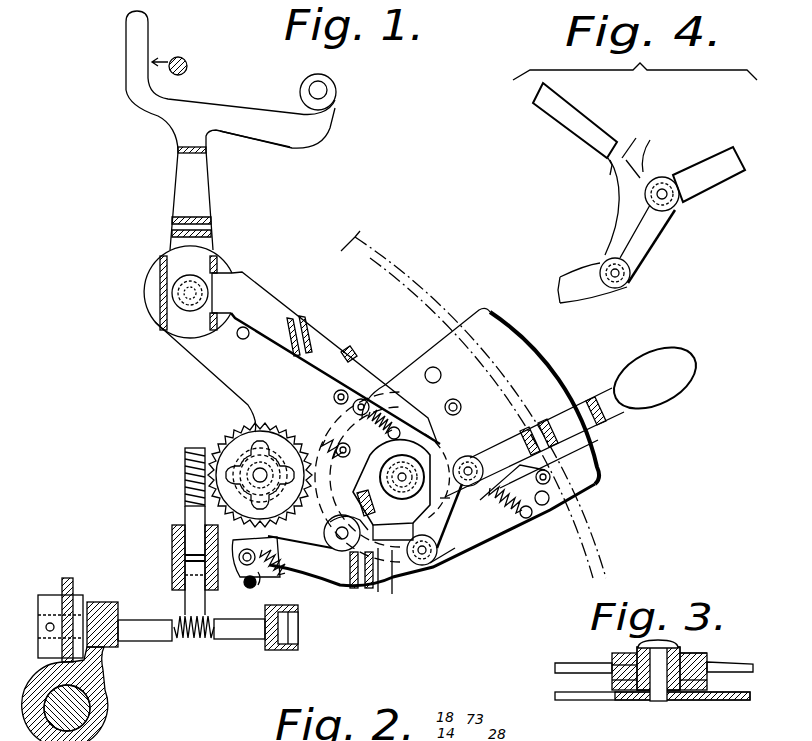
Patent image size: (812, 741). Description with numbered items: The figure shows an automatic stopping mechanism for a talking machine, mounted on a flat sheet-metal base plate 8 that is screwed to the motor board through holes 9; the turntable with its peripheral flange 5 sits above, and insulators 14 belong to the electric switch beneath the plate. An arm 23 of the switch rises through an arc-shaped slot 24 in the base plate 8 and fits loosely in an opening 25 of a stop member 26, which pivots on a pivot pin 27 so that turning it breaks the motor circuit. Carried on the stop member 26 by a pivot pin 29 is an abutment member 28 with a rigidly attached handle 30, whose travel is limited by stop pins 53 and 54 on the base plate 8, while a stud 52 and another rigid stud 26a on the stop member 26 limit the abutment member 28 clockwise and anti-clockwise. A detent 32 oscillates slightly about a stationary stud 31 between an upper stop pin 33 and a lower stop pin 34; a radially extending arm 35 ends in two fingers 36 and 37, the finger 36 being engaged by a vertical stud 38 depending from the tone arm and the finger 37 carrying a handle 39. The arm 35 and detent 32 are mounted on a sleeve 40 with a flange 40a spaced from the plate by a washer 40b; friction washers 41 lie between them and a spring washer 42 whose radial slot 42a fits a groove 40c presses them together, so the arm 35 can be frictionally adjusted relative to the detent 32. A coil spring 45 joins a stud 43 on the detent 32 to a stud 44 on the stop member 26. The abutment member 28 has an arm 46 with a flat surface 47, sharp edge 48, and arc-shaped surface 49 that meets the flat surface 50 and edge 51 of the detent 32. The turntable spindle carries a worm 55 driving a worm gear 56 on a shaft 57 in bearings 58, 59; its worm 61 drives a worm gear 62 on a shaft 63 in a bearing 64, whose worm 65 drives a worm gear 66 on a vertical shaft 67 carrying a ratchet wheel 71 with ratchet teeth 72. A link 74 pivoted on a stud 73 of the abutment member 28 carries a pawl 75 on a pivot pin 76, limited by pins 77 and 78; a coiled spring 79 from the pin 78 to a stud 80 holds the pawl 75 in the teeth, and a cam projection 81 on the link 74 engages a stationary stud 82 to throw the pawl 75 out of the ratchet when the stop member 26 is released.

In FIG. 1, the peripheral flange 5 is at (415, 282).
In FIG. 1, the base plate 8 is at (527, 364).
In FIG. 3, the base plate 8 is at (740, 702).
In FIG. 1, the holes 9 is at (240, 338).
In FIG. 1, the insulators 14 is at (405, 566).
In FIG. 1, the arm 23 is at (380, 568).
In FIG. 1, the arc-shaped slot 24 is at (396, 572).
In FIG. 1, the opening 25 is at (357, 500).
In FIG. 1, the stop member 26 is at (393, 520).
In FIG. 1, the rigid stud 26a is at (452, 550).
In FIG. 1, the pivot pin or stud 27 is at (379, 471).
In FIG. 1, the abutment member 28 is at (446, 516).
In FIG. 4, the abutment member 28 is at (647, 240).
In FIG. 1, the pivot pin 29 is at (477, 462).
In FIG. 4, the pivot pin 29 is at (673, 200).
In FIG. 1, the handle 30 is at (575, 416).
In FIG. 4, the handle 30 is at (732, 173).
In FIG. 1, the stud 31 is at (175, 293).
In FIG. 3, the stud 31 is at (660, 672).
In FIG. 1, the detent 32 is at (268, 305).
In FIG. 3, the detent 32 is at (718, 667).
In FIG. 1, the upper stop pin 33 is at (346, 348).
In FIG. 1, the lower stop pin 34 is at (334, 397).
In FIG. 1, the arm 35 is at (212, 192).
In FIG. 3, the arm 35 is at (610, 668).
In FIG. 1, the finger 36 is at (126, 71).
In FIG. 1, the finger 37 is at (320, 120).
In FIG. 1, the vertical stud 38 is at (188, 67).
In FIG. 1, the handle 39 is at (328, 90).
In FIG. 3, the sleeve 40 is at (643, 700).
In FIG. 3, the flange 40a is at (613, 680).
In FIG. 3, the washer 40b is at (680, 700).
In FIG. 3, the circumferential groove or slot 40c is at (682, 655).
In FIG. 3, the friction washers 41 is at (610, 670).
In FIG. 1, the spring washer 42 is at (150, 278).
In FIG. 3, the spring washer 42 is at (627, 657).
In FIG. 1, the radial slot 42a is at (236, 284).
In FIG. 1, the rigid stud 43 is at (364, 400).
In FIG. 1, the rigid stud or pin 44 is at (500, 510).
In FIG. 1, the coil spring 45 is at (524, 518).
In FIG. 1, the arm, projection or abutment 46 is at (455, 440).
In FIG. 4, the arm, projection or abutment 46 is at (618, 187).
In FIG. 4, the transverse flat surface 47 is at (610, 173).
In FIG. 4, the sharp corner or edge 48 is at (638, 145).
In FIG. 4, the curved arc-shaped upper surface 49 is at (646, 162).
In FIG. 4, the transverse flat surface 50 is at (618, 147).
In FIG. 4, the sharp edge or corner 51 is at (610, 160).
In FIG. 1, the rigid stud 52 is at (540, 470).
In FIG. 1, the stop pin or stud 53 is at (454, 400).
In FIG. 1, the stop pin or stud 54 is at (551, 480).
In FIG. 1, the worm 55 is at (106, 712).
In FIG. 1, the worm gear 56 is at (66, 578).
In FIG. 1, the shaft 57 is at (143, 622).
In FIG. 1, the bearing 58 is at (100, 604).
In FIG. 1, the bearing 59 is at (296, 614).
In FIG. 1, the worm 61 is at (200, 638).
In FIG. 1, the worm gear 62 is at (180, 637).
In FIG. 1, the shaft 63 is at (190, 572).
In FIG. 1, the bearing 64 is at (172, 545).
In FIG. 1, the worm 65 is at (186, 471).
In FIG. 1, the worm gear 66 is at (240, 432).
In FIG. 1, the vertical shaft 67 is at (281, 454).
In FIG. 1, the ratchet wheel 71 is at (251, 447).
In FIG. 1, the ratchet teeth 72 is at (240, 444).
In FIG. 1, the pivot pin or stud 73 is at (437, 560).
In FIG. 4, the pivot pin or stud 73 is at (630, 282).
In FIG. 4, the link 74 is at (597, 294).
In FIG. 1, the pawl 75 is at (239, 557).
In FIG. 1, the pivot pin 76 is at (278, 562).
In FIG. 1, the stop or limit pin 77 is at (277, 539).
In FIG. 1, the stop or limit pin 78 is at (250, 588).
In FIG. 1, the coiled spring 79 is at (333, 450).
In FIG. 1, the pin or stud 80 is at (355, 448).
In FIG. 1, the cam projection 81 is at (336, 547).
In FIG. 1, the stud 82 is at (330, 524).